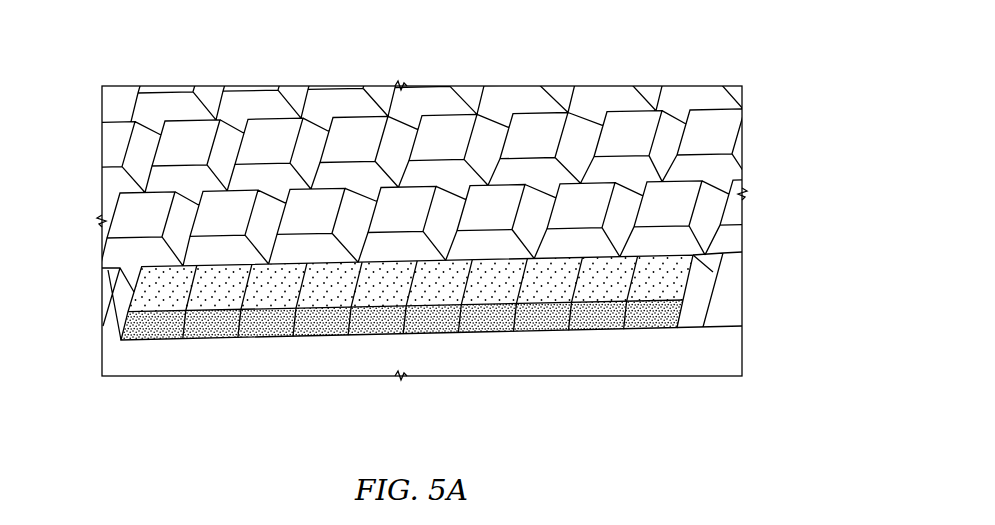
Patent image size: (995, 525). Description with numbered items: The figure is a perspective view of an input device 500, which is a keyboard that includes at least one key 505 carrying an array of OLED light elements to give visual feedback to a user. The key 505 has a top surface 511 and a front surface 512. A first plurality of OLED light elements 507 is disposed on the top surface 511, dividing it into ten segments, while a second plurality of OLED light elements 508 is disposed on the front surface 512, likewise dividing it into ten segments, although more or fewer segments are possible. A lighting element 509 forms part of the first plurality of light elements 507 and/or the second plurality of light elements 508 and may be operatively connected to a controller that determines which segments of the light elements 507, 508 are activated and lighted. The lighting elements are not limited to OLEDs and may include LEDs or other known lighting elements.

The input device 500 is at (757, 64).
The key 505 is at (709, 275).
The first plurality of OLED light elements 507 is at (317, 283).
The second plurality of OLED light elements 508 is at (305, 337).
The lighting element 509 is at (695, 296).
The top surface 511 is at (138, 295).
The front surface 512 is at (125, 327).